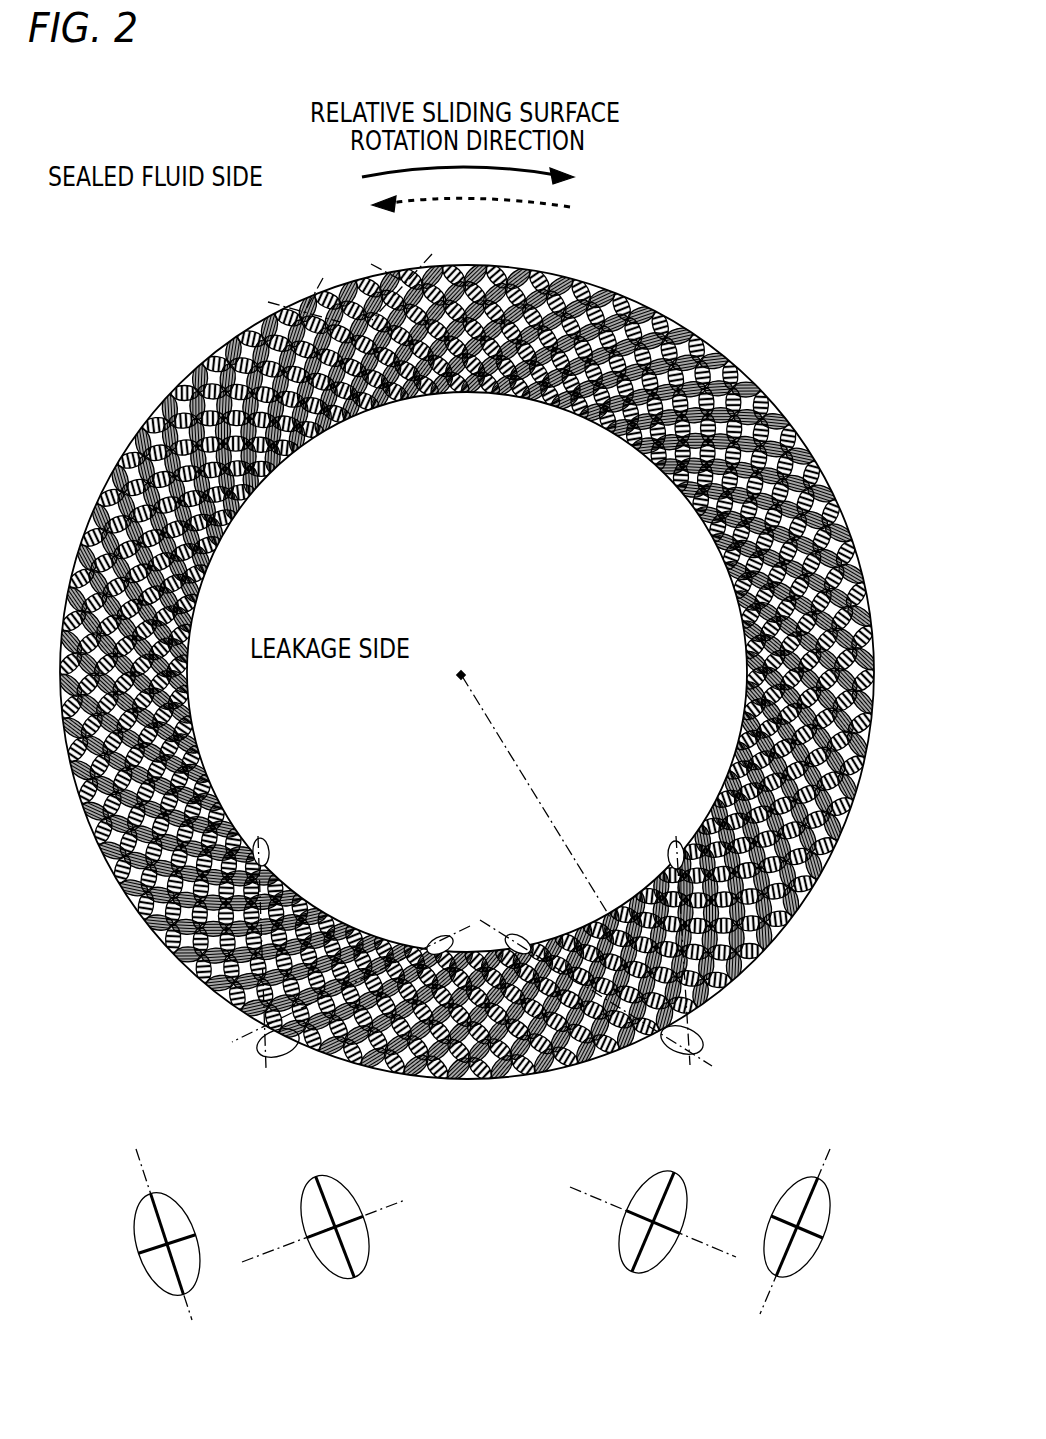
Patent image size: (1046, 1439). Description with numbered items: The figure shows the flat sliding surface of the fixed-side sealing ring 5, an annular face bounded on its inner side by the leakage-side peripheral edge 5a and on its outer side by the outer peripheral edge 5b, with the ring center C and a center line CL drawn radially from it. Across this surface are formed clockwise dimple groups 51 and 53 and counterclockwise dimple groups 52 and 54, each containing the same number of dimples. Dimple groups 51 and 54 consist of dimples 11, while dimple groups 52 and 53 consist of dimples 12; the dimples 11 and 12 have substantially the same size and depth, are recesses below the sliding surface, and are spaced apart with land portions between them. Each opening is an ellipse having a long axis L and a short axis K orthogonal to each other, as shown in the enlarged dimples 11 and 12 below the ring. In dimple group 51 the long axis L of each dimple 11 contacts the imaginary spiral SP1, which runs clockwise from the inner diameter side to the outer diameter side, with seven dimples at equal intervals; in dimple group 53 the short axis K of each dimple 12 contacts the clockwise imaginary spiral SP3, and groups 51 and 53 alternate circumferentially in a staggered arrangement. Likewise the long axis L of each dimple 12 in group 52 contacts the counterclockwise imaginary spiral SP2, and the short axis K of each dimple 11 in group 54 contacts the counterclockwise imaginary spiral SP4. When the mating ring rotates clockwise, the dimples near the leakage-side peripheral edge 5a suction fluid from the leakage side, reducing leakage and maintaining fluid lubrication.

The fixed-side sealing ring 5 is at (480, 618).
The leakage-side peripheral edge 5a is at (700, 521).
The outer peripheral edge (sealed fluid side) 5b is at (818, 471).
The clockwise dimple group 51 is at (662, 850).
The counterclockwise dimple group 52 is at (274, 852).
The clockwise dimple group 53 is at (430, 934).
The counterclockwise dimple group 54 is at (529, 932).
The dimple 11 is at (782, 1176).
The dimple 12 is at (170, 1186).
The imaginary spiral SP1 is at (270, 477).
The imaginary spiral SP2 is at (522, 398).
The imaginary spiral SP3 is at (328, 427).
The imaginary spiral SP4 is at (448, 393).
The center of sliding component C is at (463, 660).
The center line CL is at (500, 727).
The long axis L is at (140, 1228).
The short axis K is at (150, 1263).